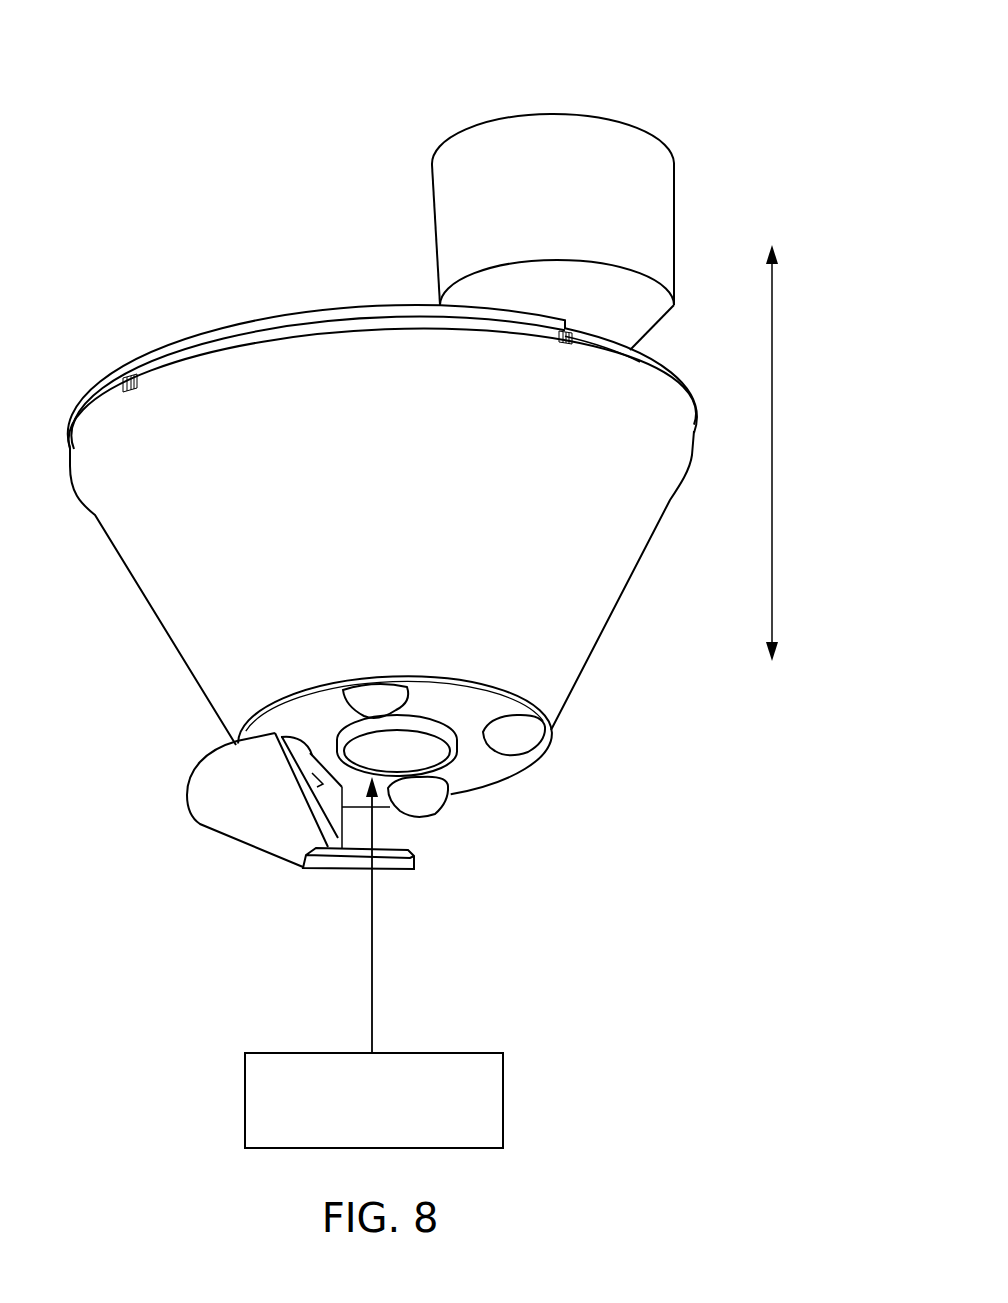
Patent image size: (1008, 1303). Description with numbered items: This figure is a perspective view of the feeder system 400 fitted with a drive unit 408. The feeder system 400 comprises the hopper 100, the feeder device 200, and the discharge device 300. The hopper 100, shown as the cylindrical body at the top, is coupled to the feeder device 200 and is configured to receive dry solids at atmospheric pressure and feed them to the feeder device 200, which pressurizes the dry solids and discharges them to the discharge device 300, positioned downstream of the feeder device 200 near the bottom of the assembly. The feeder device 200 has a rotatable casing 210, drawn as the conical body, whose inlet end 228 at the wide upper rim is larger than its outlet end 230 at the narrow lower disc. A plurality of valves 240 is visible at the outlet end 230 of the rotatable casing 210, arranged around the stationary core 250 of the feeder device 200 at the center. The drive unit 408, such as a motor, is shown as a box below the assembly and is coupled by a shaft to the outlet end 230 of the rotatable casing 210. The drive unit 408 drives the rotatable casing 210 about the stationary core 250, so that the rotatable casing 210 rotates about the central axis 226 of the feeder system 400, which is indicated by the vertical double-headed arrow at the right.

The feeder system 400 is at (280, 66).
The hopper 100 is at (622, 116).
The feeder device 200 is at (598, 633).
The rotatable casing 210 is at (168, 606).
The central axis 226 is at (774, 424).
The inlet end 228 is at (249, 280).
The outlet end 230 is at (515, 842).
The valves 240 is at (318, 740).
The stationary core 250 is at (448, 734).
The discharge device 300 is at (220, 828).
The drive unit 408 is at (398, 1135).